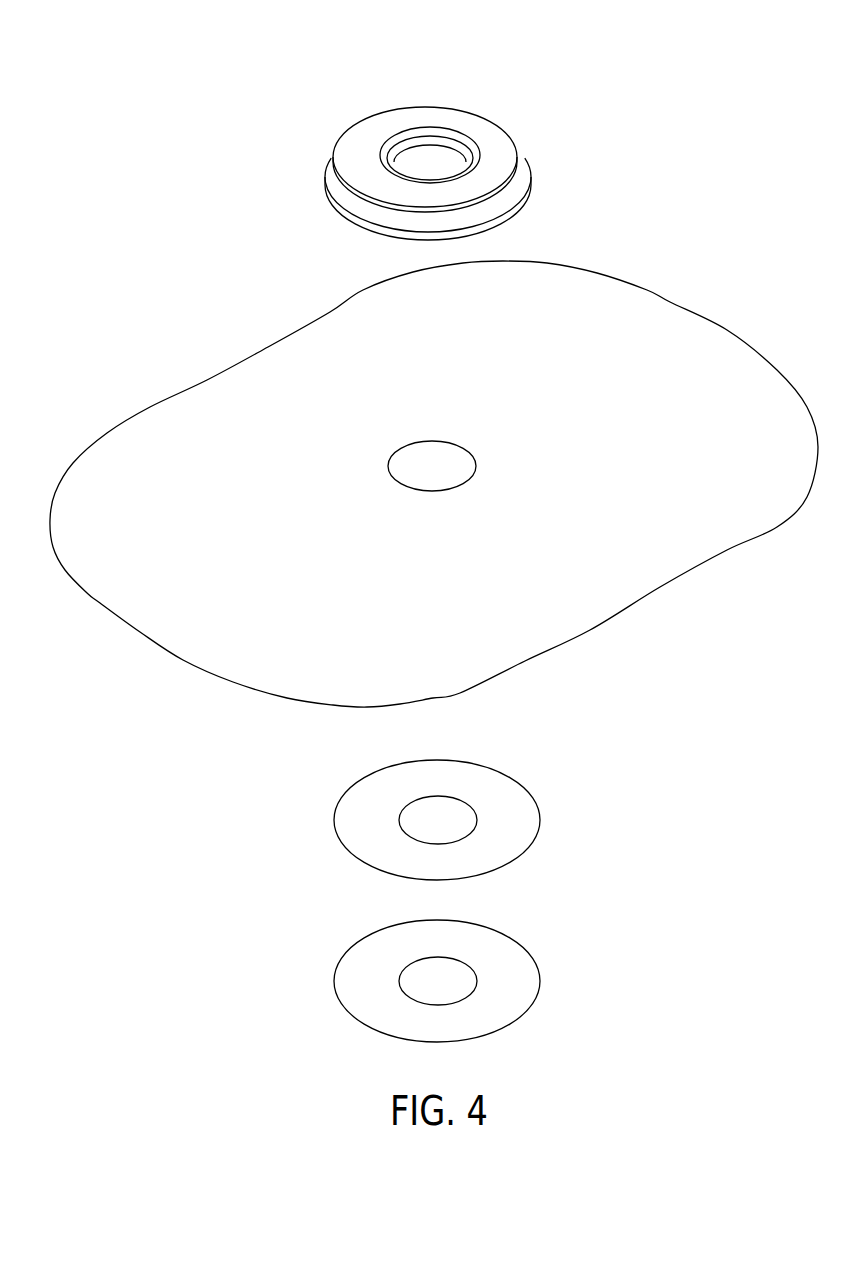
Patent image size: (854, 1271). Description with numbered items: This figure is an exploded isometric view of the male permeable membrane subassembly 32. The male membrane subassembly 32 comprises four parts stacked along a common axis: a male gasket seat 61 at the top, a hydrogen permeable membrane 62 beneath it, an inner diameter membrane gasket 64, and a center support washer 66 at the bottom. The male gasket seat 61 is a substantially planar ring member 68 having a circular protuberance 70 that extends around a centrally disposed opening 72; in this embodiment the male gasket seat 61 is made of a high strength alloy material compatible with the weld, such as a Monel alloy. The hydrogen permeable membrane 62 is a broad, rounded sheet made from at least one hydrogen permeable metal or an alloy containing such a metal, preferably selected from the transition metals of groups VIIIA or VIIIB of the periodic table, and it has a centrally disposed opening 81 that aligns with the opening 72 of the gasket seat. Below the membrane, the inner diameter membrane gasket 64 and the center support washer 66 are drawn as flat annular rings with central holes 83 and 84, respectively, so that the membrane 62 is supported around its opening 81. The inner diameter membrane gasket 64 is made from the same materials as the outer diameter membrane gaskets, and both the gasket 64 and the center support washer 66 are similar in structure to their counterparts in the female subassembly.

The male permeable membrane subassembly 32 is at (675, 198).
The male gasket seat 61 is at (523, 147).
The hydrogen permeable membrane 62 is at (262, 425).
The inner diameter membrane gasket 64 is at (357, 820).
The center support washer 66 is at (357, 970).
The substantially planar ring member 68 is at (342, 164).
The circular protuberance 70 is at (379, 123).
The centrally disposed opening 72 is at (438, 167).
The centrally disposed opening 81 is at (438, 458).
The aperture in conductive layer 83 is at (450, 817).
The aperture in adhesive layer 84 is at (452, 975).